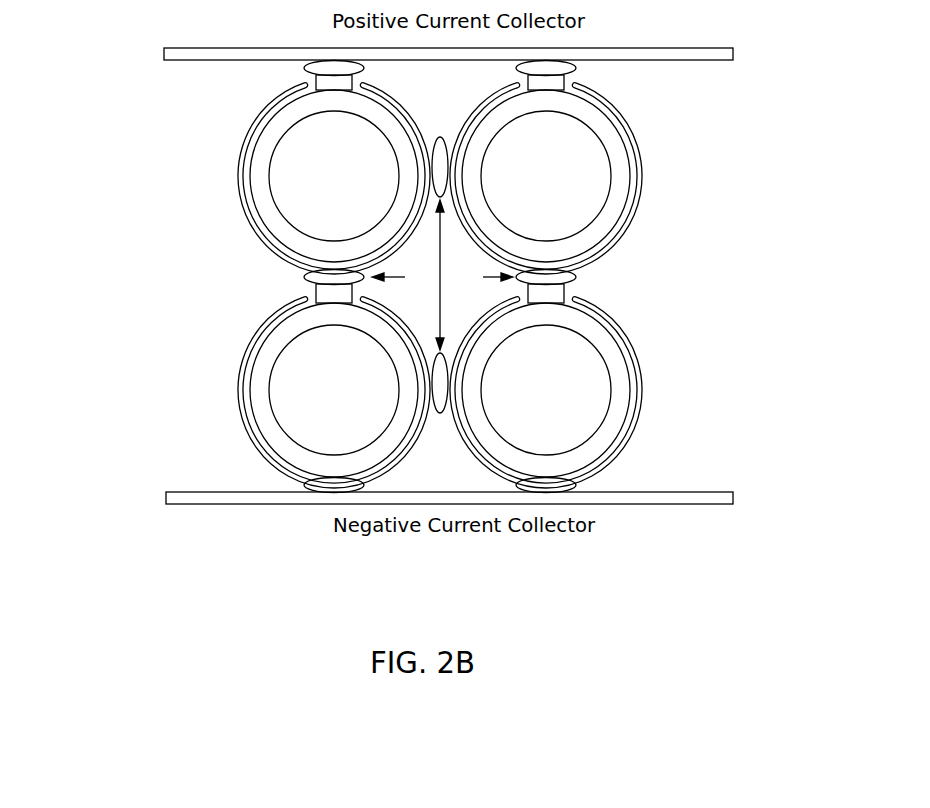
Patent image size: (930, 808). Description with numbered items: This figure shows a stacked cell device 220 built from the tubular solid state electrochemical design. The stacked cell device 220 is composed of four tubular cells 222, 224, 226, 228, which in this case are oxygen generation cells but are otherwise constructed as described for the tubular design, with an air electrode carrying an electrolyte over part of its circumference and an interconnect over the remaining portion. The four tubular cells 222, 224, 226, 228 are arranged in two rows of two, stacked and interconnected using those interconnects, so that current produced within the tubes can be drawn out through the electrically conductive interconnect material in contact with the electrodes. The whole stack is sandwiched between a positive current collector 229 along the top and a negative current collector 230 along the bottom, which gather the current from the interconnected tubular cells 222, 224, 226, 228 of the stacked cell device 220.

The stacked cell device 220 is at (124, 162).
The tubular cell 222 is at (219, 207).
The tubular cell 224 is at (219, 362).
The tubular cell 226 is at (656, 203).
The tubular cell 228 is at (658, 358).
The positive current collector 229 is at (734, 52).
The negative current collector 230 is at (734, 495).